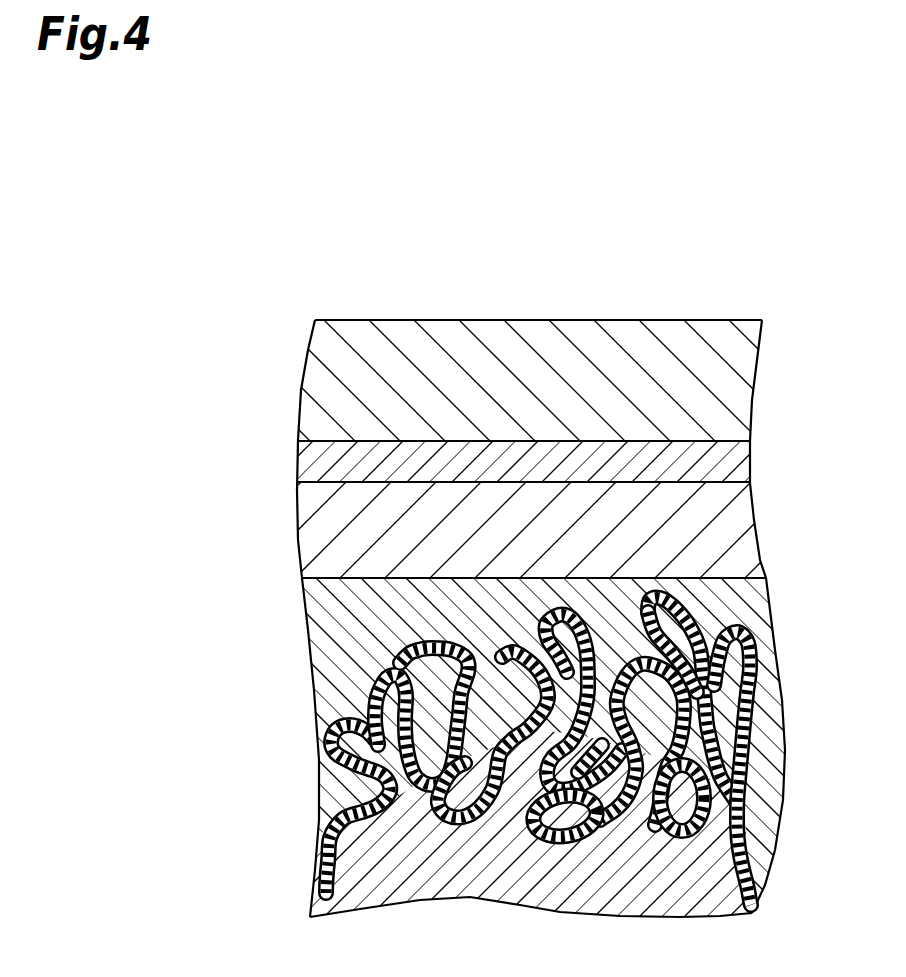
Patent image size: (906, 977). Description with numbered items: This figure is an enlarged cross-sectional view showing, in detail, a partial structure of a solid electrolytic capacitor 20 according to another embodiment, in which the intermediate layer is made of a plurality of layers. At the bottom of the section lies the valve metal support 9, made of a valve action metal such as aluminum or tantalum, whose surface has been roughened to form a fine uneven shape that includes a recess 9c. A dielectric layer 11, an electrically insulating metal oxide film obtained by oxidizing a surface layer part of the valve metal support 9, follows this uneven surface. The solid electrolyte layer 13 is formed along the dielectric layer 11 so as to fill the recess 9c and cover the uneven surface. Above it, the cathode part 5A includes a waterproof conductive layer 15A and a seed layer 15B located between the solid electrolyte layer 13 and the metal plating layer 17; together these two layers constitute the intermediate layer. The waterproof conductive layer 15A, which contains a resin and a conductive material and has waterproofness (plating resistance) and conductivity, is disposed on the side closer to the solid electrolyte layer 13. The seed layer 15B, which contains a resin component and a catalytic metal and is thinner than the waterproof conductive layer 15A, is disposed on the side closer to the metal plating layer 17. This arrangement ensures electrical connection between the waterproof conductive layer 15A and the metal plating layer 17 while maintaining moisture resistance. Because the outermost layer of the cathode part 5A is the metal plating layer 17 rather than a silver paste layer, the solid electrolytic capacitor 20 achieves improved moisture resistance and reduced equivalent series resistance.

The solid electrolytic capacitor 20 is at (706, 271).
The cathode part 5A is at (398, 314).
The metal plating layer 17 is at (300, 373).
The seed layer 15B is at (300, 458).
The waterproof conductive layer 15A is at (300, 515).
The solid electrolyte layer 13 is at (310, 640).
The valve metal support 9 is at (427, 890).
The recess 9c is at (560, 838).
The dielectric layer 11 is at (688, 832).